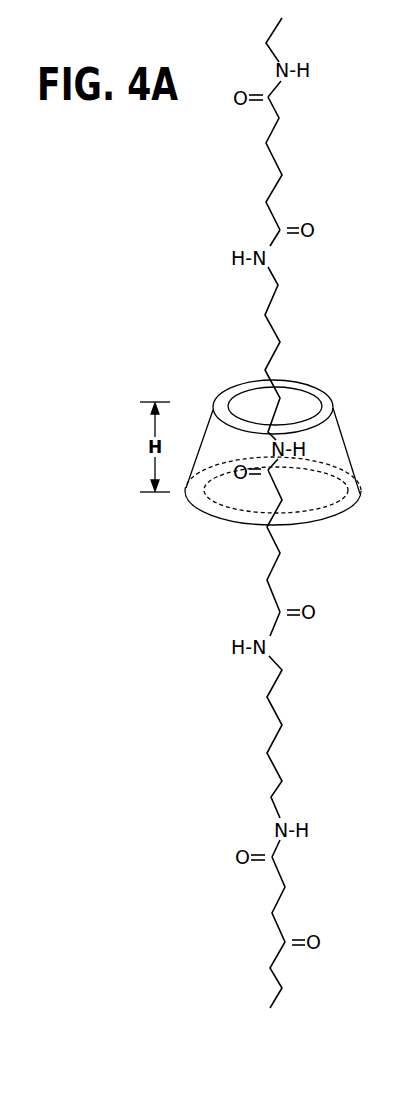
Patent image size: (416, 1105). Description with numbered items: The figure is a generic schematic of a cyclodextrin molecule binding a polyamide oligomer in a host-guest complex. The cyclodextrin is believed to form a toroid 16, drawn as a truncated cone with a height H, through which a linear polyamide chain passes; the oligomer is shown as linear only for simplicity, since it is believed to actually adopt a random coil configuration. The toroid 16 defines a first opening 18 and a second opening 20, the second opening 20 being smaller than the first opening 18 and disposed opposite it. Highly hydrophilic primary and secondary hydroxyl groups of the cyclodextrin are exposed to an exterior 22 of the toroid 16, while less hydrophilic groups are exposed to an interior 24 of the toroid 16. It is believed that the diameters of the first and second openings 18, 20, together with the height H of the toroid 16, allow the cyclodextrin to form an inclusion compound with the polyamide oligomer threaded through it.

The toroid 16 is at (286, 442).
The first opening 18 is at (317, 527).
The second opening 20 is at (288, 378).
The exterior 22 is at (216, 432).
The interior 24 is at (299, 402).